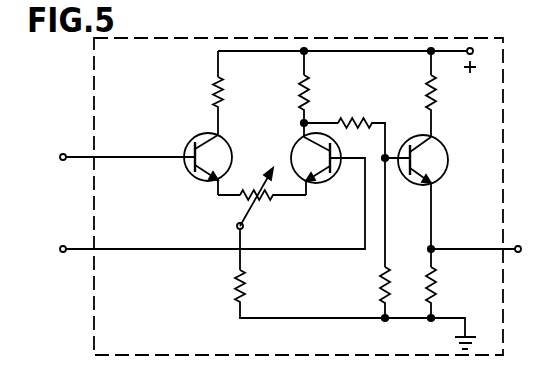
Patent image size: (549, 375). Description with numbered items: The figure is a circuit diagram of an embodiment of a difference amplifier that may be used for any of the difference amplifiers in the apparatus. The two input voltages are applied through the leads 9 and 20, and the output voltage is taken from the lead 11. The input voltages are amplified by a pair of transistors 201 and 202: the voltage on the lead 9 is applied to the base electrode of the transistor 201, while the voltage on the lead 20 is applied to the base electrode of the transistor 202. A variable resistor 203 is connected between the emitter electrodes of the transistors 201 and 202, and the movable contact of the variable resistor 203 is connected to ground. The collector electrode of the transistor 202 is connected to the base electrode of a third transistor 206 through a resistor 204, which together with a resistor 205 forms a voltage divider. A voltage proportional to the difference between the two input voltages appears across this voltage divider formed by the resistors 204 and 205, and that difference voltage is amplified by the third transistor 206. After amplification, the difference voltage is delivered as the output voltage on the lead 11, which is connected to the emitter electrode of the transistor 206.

The lead 9 is at (73, 161).
The lead 20 is at (81, 252).
The lead 11 is at (511, 248).
The transistor 201 is at (191, 140).
The transistor 202 is at (296, 146).
The variable resistor 203 is at (256, 200).
The resistor 204 is at (364, 119).
The resistor 205 is at (380, 284).
The third transistor 206 is at (437, 139).